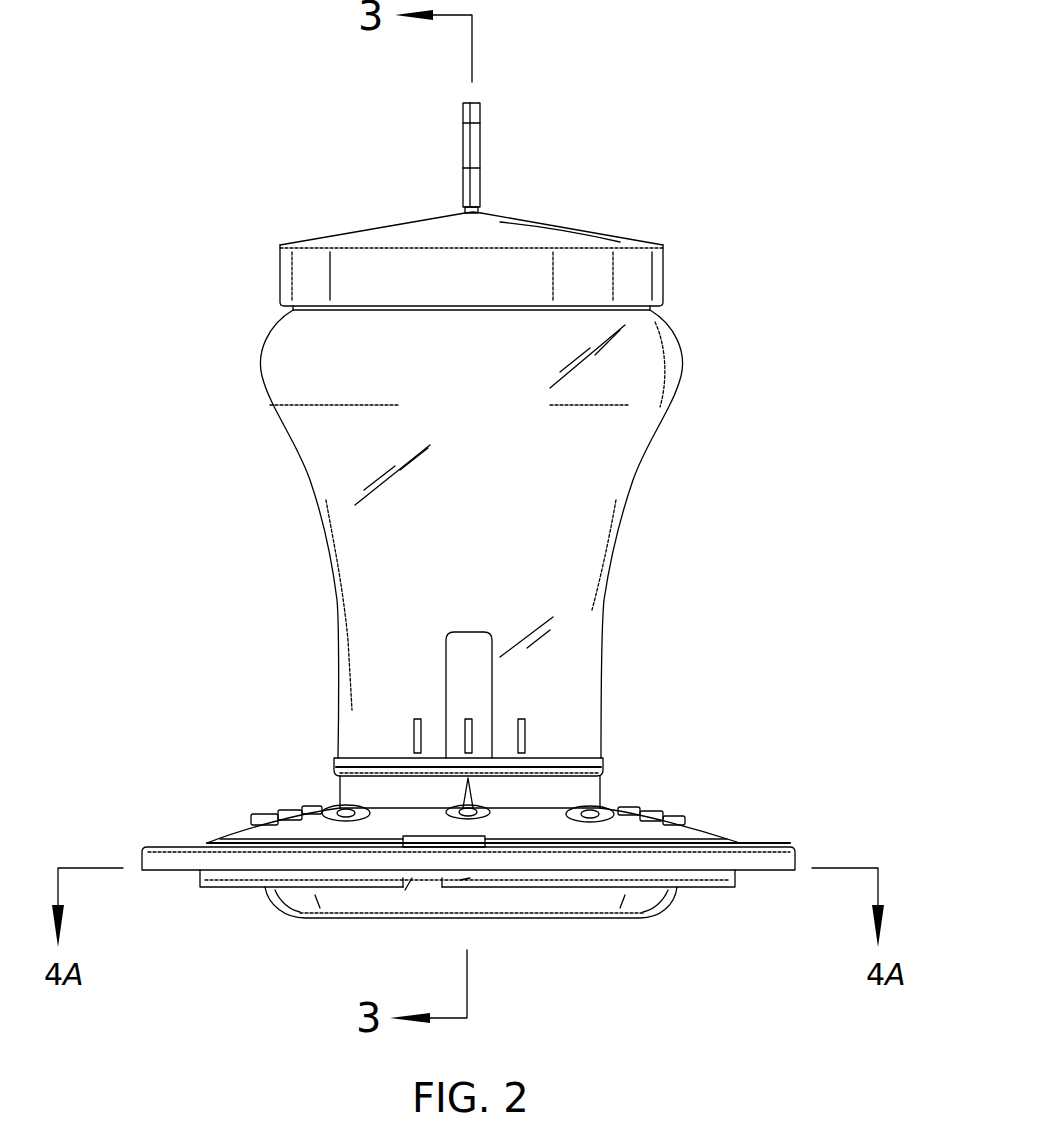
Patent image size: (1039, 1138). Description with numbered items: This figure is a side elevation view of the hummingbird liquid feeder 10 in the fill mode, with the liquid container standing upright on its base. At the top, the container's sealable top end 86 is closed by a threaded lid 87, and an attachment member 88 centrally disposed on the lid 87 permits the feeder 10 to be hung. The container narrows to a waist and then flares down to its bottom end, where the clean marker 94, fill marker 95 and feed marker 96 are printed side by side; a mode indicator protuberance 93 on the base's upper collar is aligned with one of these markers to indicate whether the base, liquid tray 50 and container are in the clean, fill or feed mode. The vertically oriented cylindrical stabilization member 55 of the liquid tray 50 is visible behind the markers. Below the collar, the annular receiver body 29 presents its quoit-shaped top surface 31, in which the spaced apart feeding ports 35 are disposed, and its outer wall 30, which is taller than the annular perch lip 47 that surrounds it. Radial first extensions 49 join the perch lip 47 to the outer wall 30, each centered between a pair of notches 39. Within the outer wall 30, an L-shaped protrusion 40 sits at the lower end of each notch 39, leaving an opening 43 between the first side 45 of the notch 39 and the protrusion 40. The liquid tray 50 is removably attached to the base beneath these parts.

The hummingbird liquid feeder 10 is at (200, 230).
The annular receiver body 29 is at (697, 820).
The outer wall 30 is at (205, 882).
The quoit-shaped top surface 31 is at (248, 836).
The feeding ports 35 is at (285, 803).
The notch 39 is at (330, 805).
The L-shaped protrusion 40 is at (447, 878).
The opening 43 is at (425, 882).
The first side 45 is at (408, 880).
The annular perch lip 47 is at (147, 848).
The first extensions 49 is at (204, 842).
The liquid tray 50 is at (665, 916).
The cylindrical stabilization member 55 is at (490, 690).
The sealable top end 86 is at (662, 314).
The lid 87 is at (632, 240).
The attachment member 88 is at (482, 126).
The mode indicator protuberance 93 is at (604, 774).
The clean marker 94 is at (412, 735).
The fill marker 95 is at (474, 735).
The feed marker 96 is at (526, 740).